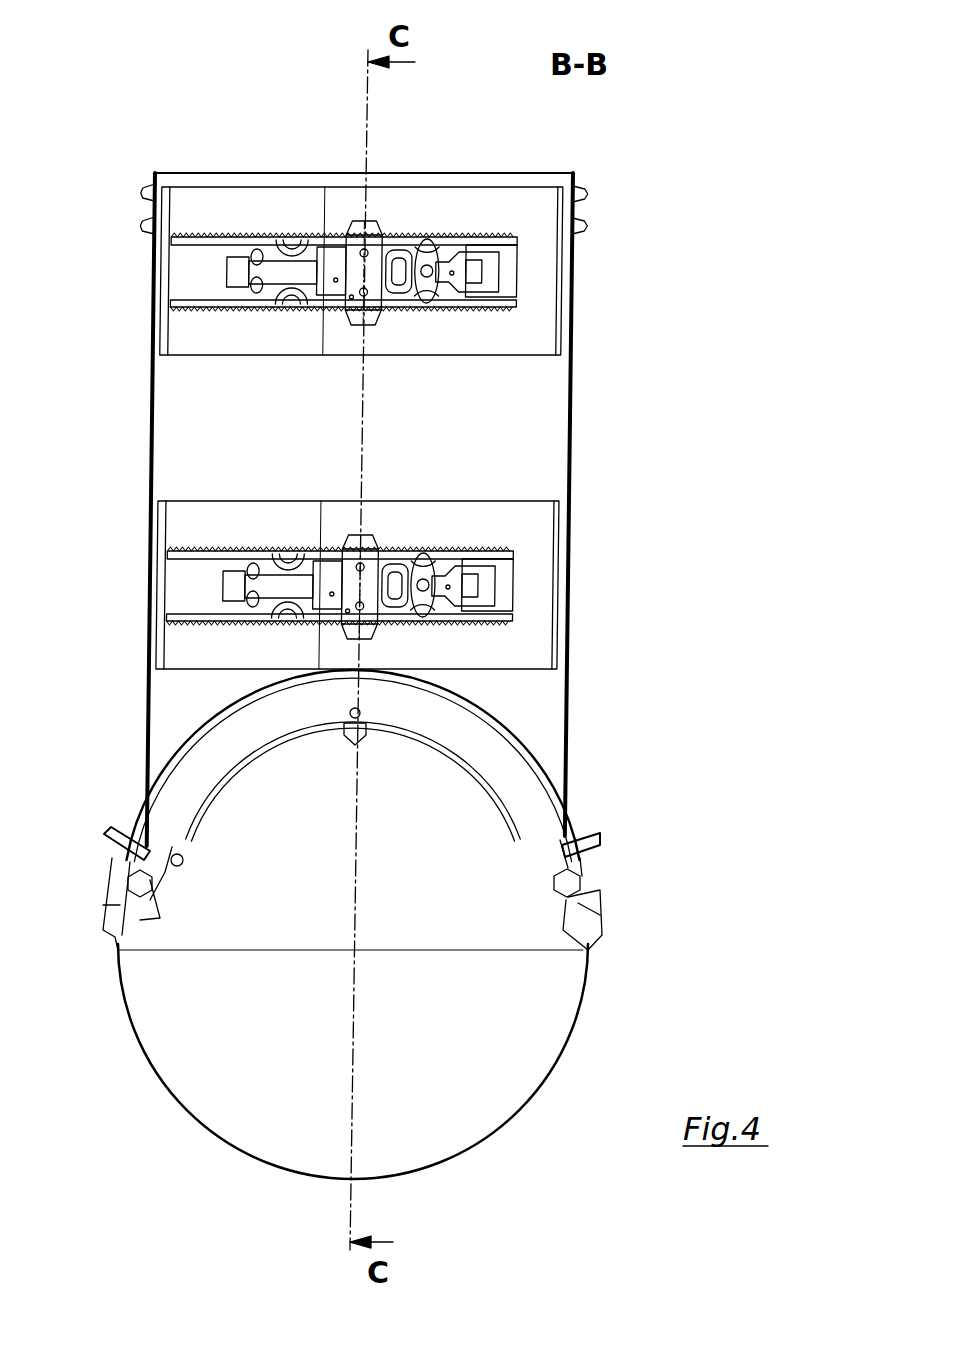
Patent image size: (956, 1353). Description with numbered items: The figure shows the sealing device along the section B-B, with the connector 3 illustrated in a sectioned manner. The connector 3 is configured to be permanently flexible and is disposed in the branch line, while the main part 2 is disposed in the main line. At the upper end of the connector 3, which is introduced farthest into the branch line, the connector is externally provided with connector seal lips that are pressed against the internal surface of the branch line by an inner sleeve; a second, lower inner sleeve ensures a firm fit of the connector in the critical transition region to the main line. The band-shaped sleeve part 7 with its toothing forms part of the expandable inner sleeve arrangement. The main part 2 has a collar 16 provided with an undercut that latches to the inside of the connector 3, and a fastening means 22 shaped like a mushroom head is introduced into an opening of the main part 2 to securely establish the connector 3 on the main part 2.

The main part 2 is at (125, 932).
The connector 3 is at (543, 438).
The sleeve part 7 is at (548, 1083).
The collar 16 is at (428, 718).
The fastening means 22 is at (348, 743).